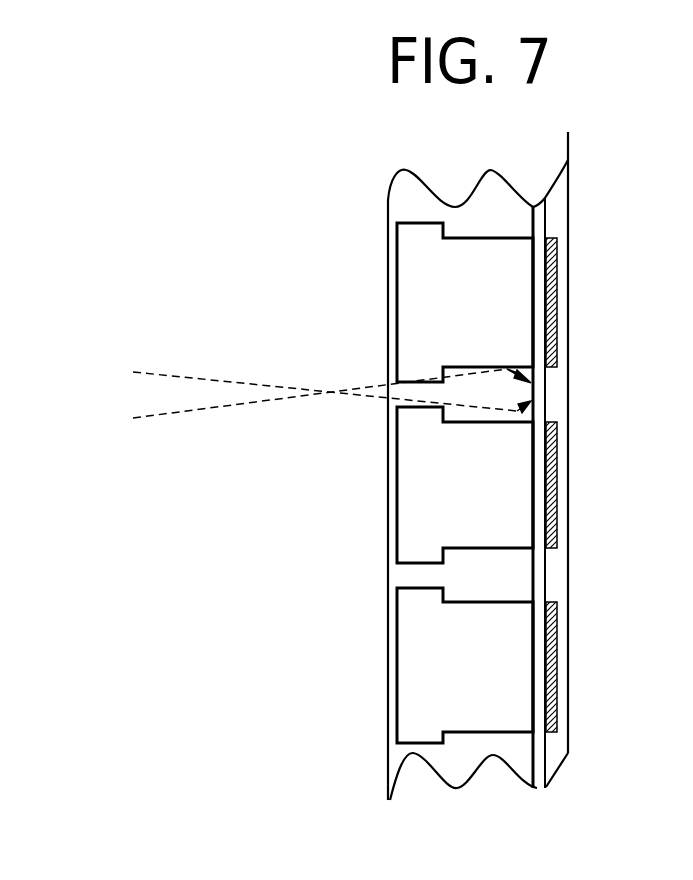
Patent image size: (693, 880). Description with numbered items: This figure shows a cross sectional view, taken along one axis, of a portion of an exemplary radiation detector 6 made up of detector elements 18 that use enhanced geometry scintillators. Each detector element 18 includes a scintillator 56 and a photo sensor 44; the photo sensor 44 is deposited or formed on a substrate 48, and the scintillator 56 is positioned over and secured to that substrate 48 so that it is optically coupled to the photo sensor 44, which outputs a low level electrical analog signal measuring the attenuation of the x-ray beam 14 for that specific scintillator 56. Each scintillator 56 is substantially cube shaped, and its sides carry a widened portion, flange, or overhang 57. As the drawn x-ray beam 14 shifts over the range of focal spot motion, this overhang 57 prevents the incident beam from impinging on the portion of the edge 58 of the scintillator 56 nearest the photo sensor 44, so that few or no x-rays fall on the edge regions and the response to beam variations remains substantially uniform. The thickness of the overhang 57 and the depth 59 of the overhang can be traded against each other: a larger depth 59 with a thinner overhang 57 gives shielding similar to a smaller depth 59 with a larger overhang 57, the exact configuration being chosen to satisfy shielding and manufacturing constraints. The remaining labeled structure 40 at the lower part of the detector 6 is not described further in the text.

The radiation detector 6 is at (331, 758).
The x-ray beam 14 is at (195, 413).
The detector element 18 is at (614, 232).
The detector array 40 is at (479, 791).
The photo sensor 44 is at (557, 292).
The substrate 48 is at (567, 757).
The scintillator 56 is at (397, 322).
The widened portion, flange, or overhang 57 is at (398, 577).
The edge of the scintillator 58 is at (533, 405).
The depth of the overhang 59 is at (398, 745).